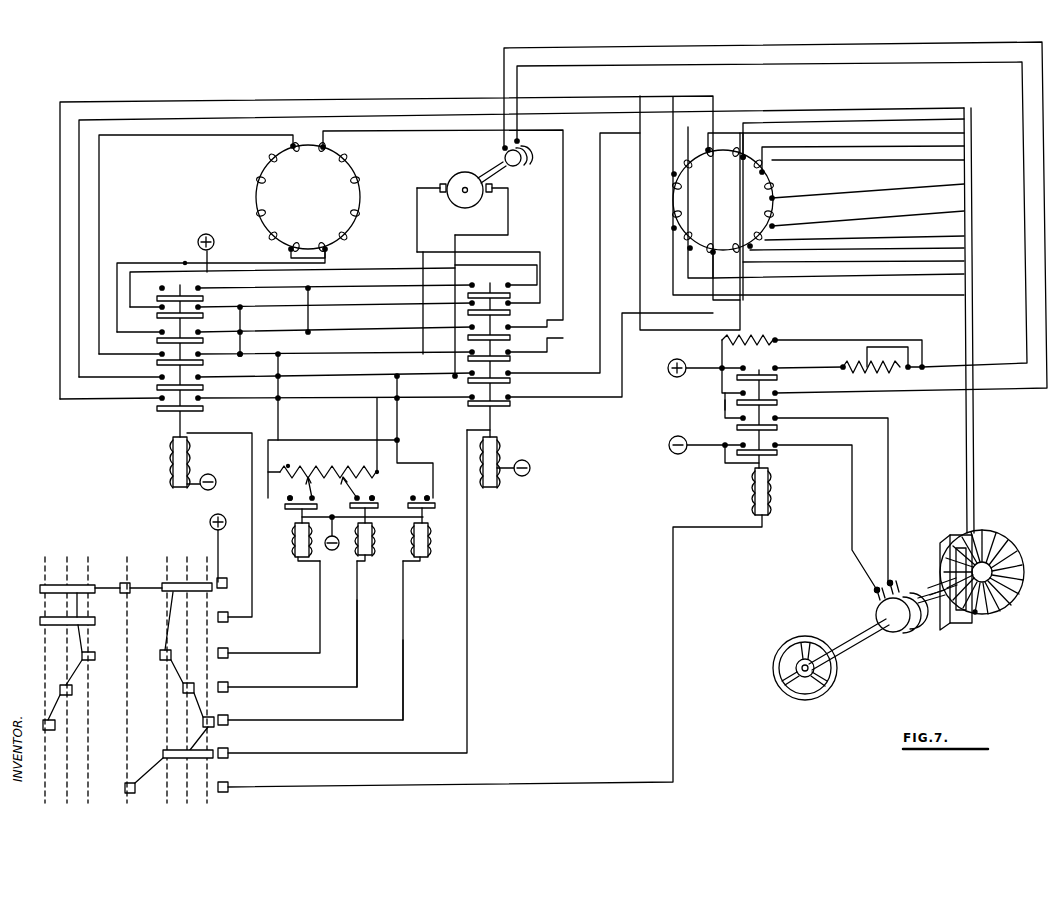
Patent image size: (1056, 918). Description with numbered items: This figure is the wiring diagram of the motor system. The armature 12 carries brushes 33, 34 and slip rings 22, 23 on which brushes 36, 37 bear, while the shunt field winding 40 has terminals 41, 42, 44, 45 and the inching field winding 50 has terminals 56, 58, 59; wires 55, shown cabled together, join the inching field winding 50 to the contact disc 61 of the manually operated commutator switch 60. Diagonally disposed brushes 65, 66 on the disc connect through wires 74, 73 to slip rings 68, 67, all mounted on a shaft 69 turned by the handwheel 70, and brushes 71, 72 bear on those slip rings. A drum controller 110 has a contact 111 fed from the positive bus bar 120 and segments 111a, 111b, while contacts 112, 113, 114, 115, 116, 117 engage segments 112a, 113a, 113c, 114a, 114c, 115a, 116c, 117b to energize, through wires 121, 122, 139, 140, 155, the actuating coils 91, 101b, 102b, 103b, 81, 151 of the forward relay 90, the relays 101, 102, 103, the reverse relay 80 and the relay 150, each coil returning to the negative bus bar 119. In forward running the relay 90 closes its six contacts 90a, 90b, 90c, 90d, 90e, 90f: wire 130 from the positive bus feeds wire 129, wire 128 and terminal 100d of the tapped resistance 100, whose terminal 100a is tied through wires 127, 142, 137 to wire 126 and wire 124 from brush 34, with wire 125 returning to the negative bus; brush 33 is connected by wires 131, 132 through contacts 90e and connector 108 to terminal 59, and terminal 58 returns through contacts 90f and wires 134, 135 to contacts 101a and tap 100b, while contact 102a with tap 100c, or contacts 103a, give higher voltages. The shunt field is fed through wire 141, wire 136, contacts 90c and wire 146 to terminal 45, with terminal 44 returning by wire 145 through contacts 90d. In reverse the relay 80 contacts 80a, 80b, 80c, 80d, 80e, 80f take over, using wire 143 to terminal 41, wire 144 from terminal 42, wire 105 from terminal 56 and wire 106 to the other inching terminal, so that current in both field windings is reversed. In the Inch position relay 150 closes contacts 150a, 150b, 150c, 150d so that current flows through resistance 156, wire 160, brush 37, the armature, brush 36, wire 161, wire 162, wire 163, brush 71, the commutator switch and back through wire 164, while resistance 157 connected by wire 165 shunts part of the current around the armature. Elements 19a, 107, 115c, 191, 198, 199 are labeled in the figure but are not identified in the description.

The motor 12 is at (462, 170).
The conductor 19a is at (185, 262).
The clutch 22 is at (517, 167).
The clutch discs 23 is at (530, 163).
The motor brush 33 is at (441, 183).
The motor brush 34 is at (489, 194).
The clutch terminal 36 is at (502, 148).
The clutch terminal 37 is at (521, 141).
The commutator 40 is at (308, 197).
The commutator brush 41 is at (330, 148).
The commutator brush 42 is at (289, 250).
The commutator brush 44 is at (280, 146).
The commutator brush 45 is at (330, 250).
The commutator 50 is at (818, 198).
The cable 55 is at (893, 150).
The commutator brush 56 is at (748, 156).
The commutator brush 58 is at (700, 143).
The commutator brush 59 is at (756, 258).
The telemotor unit 60 is at (955, 650).
The telemotor 61 is at (1000, 540).
The telemotor base 65 is at (975, 612).
The telemotor frame 66 is at (950, 533).
The clutch discs 67 is at (912, 612).
The clutch 68 is at (905, 632).
The shaft 69 is at (845, 648).
The hand wheel 70 is at (822, 692).
The clutch terminal 71 is at (899, 578).
The clutch terminal 72 is at (878, 600).
The motor shaft 73 is at (935, 578).
The shaft 74 is at (938, 612).
The relay 80 is at (501, 361).
The relay contact 80a is at (496, 276).
The relay contact 80b is at (511, 306).
The relay contact 80c is at (511, 330).
The relay contact 80d is at (511, 355).
The relay contact 80e is at (511, 376).
The relay contact 80f is at (511, 399).
The relay coil 81 is at (480, 484).
The relay 90 is at (171, 374).
The relay contact 90a is at (182, 288).
The relay contact 90b is at (147, 288).
The relay contact 90c is at (160, 310).
The relay contact 90d is at (160, 335).
The relay contact 90e is at (160, 357).
The relay contact 90f is at (160, 380).
The relay coil 91 is at (190, 460).
The resistor 100 is at (352, 472).
The resistor tap 100a is at (304, 460).
The resistor tap 100b is at (306, 483).
The resistor tap 100c is at (345, 486).
The resistor tap 100d is at (377, 470).
The relay 101 is at (293, 538).
The relay contact 101a is at (288, 503).
The relay armature 101b is at (306, 520).
The relay 102 is at (374, 528).
The relay contact 102a is at (383, 489).
The relay coil lead 102b is at (312, 624).
The relay 103 is at (431, 528).
The relay contact 103a is at (430, 496).
The relay coil lead 103b is at (345, 640).
The conductor 105 is at (620, 133).
The conductor 106 is at (622, 384).
The supply conductor 107 is at (58, 250).
The supply conductor 108 is at (380, 116).
The controller 110 is at (125, 650).
The controller terminal 111 is at (227, 588).
The controller contact 111a is at (98, 593).
The controller contact 111b is at (123, 582).
The controller terminal 112 is at (228, 620).
The controller contact 112a is at (95, 621).
The controller terminal 113 is at (228, 656).
The controller contact 113a is at (96, 657).
The controller contact 113c is at (160, 660).
The controller terminal 114 is at (228, 690).
The controller contact 114a is at (73, 690).
The controller contact 114c is at (183, 688).
The controller terminal 115 is at (228, 724).
The controller contact 115a is at (55, 725).
The controller contact 115c is at (203, 722).
The controller terminal 116 is at (228, 757).
The controller contact 116c is at (162, 754).
The controller terminal 117 is at (228, 791).
The controller contact 117b is at (135, 789).
The negative supply terminal 119 is at (216, 479).
The positive supply terminal 120 is at (207, 234).
The conductor 121 is at (252, 436).
The conductor 122 is at (320, 618).
The conductor 124 is at (509, 222).
The conductor 125 is at (362, 270).
The conductor 126 is at (292, 304).
The conductor 127 is at (282, 418).
The conductor 128 is at (377, 428).
The conductor 129 is at (352, 294).
The conductor 130 is at (340, 285).
The conductor 131 is at (425, 206).
The conductor 132 is at (250, 376).
The conductor 134 is at (400, 428).
The conductor 135 is at (314, 441).
The conductor 136 is at (328, 335).
The conductor 137 is at (240, 340).
The conductor 139 is at (296, 400).
The conductor 140 is at (470, 620).
The conductor 141 is at (312, 325).
The conductor 142 is at (332, 360).
The conductor 143 is at (428, 126).
The conductor 144 is at (420, 243).
The conductor 145 is at (148, 134).
The conductor 146 is at (117, 262).
The relay 150 is at (759, 413).
The relay contact 150a is at (808, 358).
The relay contact 150b is at (782, 393).
The relay contact 150c is at (782, 418).
The relay contact 150d is at (782, 445).
The relay coil 151 is at (754, 492).
The conductor 155 is at (676, 640).
The resistor 156 is at (860, 352).
The resistor 157 is at (722, 340).
The conductor 160 is at (560, 70).
The conductor 161 is at (626, 46).
The conductor 162 is at (724, 402).
The conductor 163 is at (889, 472).
The conductor 164 is at (852, 560).
The conductor 165 is at (818, 333).
The conductor 191 is at (416, 204).
The conductor 198 is at (359, 640).
The conductor 199 is at (405, 660).